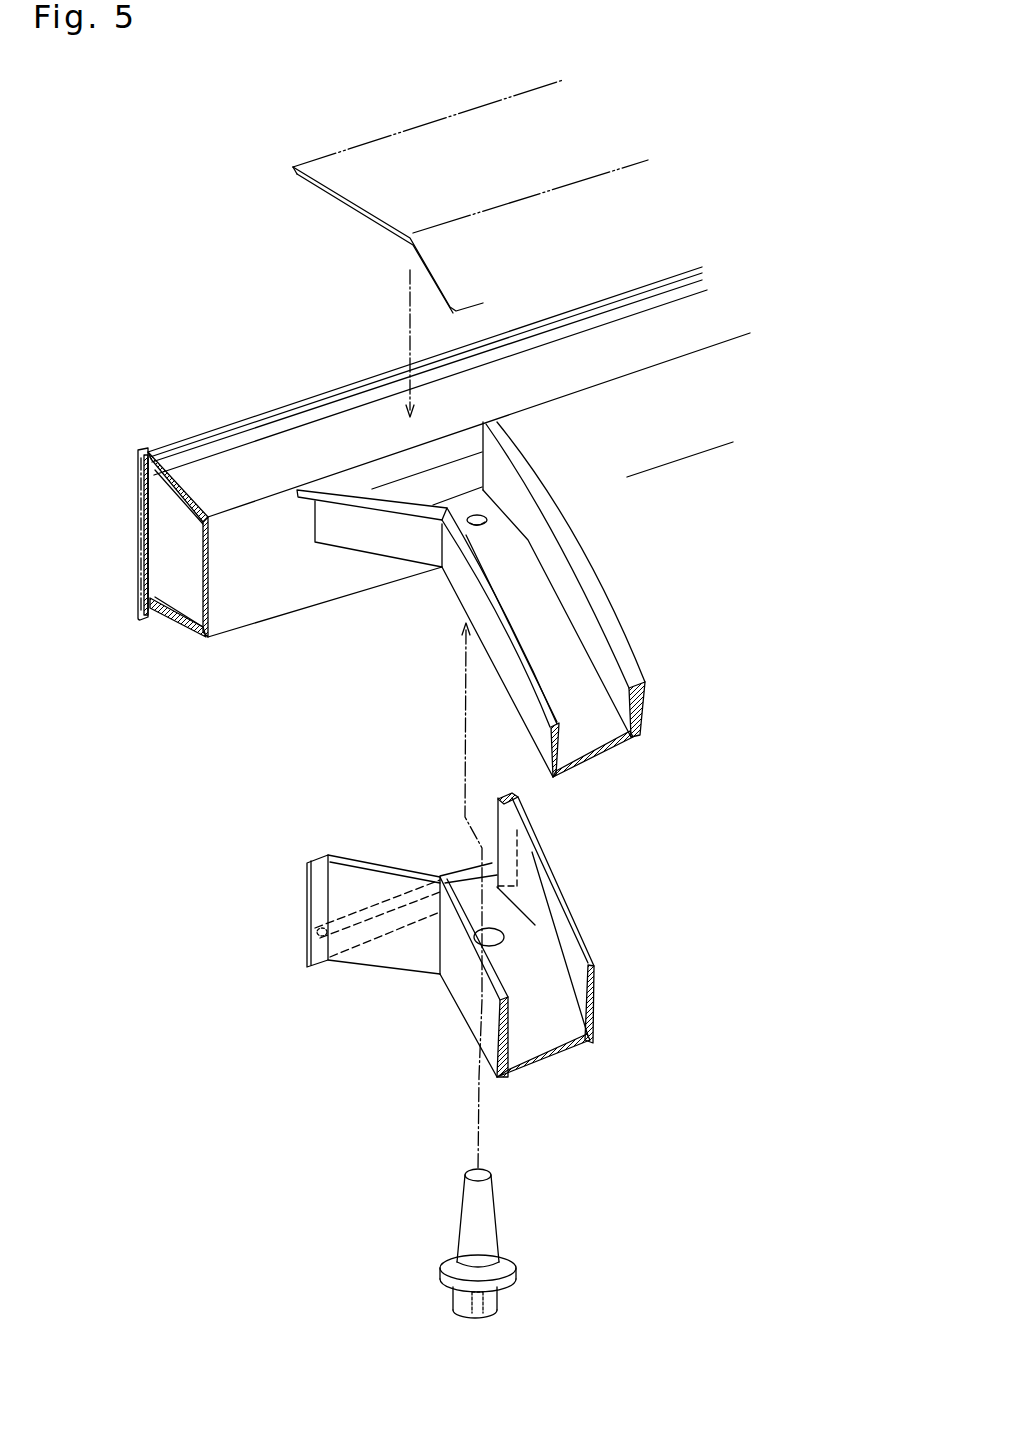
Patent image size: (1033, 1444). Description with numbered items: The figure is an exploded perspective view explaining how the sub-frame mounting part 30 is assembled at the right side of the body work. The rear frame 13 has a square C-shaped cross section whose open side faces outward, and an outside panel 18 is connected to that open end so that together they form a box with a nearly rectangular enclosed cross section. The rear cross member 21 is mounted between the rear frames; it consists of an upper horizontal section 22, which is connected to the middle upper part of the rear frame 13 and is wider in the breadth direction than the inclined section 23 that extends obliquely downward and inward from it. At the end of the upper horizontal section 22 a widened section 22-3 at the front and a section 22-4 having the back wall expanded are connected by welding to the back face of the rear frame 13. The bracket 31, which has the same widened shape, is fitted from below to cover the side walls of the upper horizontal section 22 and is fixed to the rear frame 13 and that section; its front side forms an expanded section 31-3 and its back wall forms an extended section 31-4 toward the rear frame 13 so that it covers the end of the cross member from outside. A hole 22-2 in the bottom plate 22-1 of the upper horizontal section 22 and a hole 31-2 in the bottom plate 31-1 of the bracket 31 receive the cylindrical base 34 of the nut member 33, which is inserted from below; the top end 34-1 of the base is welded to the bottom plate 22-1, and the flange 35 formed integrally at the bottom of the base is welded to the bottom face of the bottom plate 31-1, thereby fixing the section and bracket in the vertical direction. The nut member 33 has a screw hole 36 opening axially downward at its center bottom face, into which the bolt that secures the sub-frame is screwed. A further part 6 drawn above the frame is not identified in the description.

The panel 6 is at (340, 198).
The rear frame 13 is at (180, 617).
The outside panel 18 is at (138, 545).
The rear cross member 21 is at (586, 615).
The upper horizontal section 22 is at (501, 457).
The bottom plate 22-1 is at (507, 529).
The hole 22-2 is at (535, 485).
The widened section 22-3 is at (387, 532).
The section having the back wall expanded 22-4 is at (473, 513).
The inclined section 23 is at (588, 727).
The sub-frame mounting part 30 is at (591, 1059).
The bracket 31 is at (525, 935).
The bottom plate 31-1 is at (542, 996).
The hole 31-2 is at (500, 935).
The expanded section 31-3 is at (397, 953).
The extended section 31-4 is at (518, 815).
The nut member 33 is at (496, 1224).
The cylindrical base 34 is at (486, 1194).
The top end 34-1 is at (488, 1172).
The flange 35 is at (440, 1267).
The screw hole 36 is at (465, 1293).